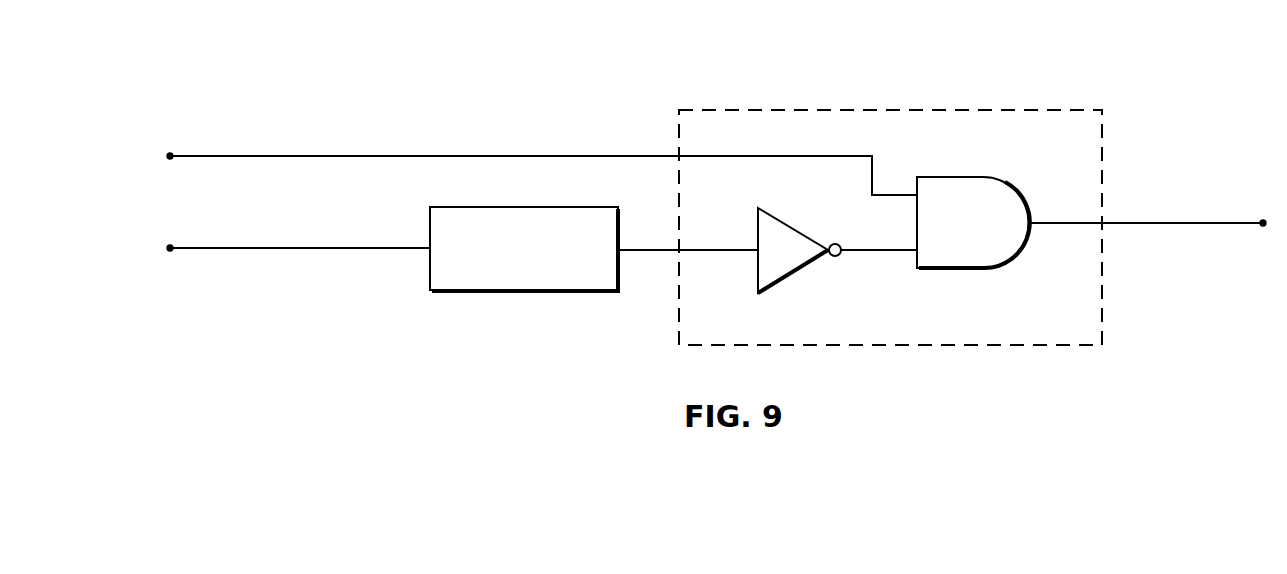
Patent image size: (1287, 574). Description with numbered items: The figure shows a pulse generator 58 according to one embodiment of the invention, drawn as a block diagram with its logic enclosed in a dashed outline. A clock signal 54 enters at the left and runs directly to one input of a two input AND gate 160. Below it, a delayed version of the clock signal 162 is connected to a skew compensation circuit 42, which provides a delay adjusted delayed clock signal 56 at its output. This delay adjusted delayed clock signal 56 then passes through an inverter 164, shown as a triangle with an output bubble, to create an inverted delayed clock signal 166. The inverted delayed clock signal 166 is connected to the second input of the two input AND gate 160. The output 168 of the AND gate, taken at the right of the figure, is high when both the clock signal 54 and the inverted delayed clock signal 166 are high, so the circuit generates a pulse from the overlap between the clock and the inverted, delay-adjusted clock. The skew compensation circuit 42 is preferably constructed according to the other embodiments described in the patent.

The clock signal 54 is at (233, 123).
The delayed version of the clock signal 162 is at (251, 215).
The skew compensation circuit 42 is at (437, 291).
The delay adjusted delayed clock signal 56 is at (720, 248).
The pulse generator 58 is at (970, 110).
The inverter 164 is at (772, 216).
The inverted delayed clock signal 166 is at (878, 255).
The two input AND gate 160 is at (950, 177).
The output 168 is at (1183, 193).